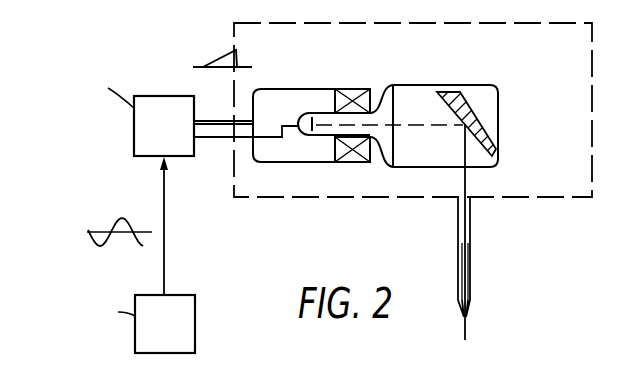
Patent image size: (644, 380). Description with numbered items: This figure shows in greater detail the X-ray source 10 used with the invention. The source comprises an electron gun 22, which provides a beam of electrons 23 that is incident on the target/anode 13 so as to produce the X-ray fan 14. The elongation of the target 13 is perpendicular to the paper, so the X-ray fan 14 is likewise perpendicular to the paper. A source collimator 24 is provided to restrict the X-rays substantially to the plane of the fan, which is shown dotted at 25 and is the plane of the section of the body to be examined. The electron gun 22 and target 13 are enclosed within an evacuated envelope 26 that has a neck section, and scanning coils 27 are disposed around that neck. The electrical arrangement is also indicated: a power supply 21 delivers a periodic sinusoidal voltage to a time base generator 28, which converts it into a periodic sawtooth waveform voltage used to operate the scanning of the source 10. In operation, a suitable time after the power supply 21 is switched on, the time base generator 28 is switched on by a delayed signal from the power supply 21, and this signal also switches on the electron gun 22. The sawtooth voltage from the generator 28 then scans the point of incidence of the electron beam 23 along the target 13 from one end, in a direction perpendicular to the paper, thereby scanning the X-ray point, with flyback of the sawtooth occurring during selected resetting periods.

The X-ray source 10 is at (233, 35).
The target/anode 13 is at (486, 137).
The X-ray fan 14 is at (466, 185).
The power supply 21 is at (196, 320).
The electron gun 22 is at (323, 138).
The beam of electrons 23 is at (420, 125).
The source collimator 24 is at (470, 230).
The plane of the fan 25 is at (469, 331).
The evacuated envelope 26 is at (498, 92).
The scanning coils 27 is at (352, 89).
The time base generator 28 is at (134, 137).